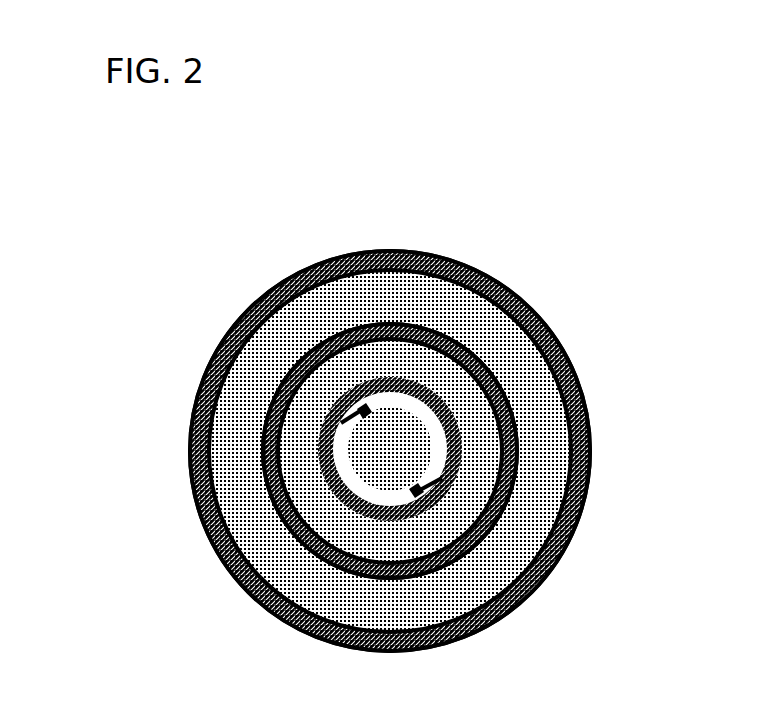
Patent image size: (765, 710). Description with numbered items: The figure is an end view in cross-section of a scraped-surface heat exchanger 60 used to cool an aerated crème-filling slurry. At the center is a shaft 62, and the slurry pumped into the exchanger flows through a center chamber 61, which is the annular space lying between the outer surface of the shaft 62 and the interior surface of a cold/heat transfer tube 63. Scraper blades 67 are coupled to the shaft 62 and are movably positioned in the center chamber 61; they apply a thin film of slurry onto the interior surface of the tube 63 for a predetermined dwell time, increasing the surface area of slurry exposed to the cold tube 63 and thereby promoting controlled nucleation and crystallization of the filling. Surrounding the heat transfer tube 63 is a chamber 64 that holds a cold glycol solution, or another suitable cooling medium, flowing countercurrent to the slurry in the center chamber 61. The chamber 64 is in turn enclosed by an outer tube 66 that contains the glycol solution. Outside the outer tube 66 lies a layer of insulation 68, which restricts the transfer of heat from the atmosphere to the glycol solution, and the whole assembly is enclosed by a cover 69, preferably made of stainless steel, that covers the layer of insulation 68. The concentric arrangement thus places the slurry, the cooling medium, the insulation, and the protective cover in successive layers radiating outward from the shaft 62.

The scraped-surface heat exchanger 60 is at (216, 276).
The center chamber 61 is at (402, 402).
The shaft 62 is at (407, 440).
The cold/heat transfer tube 63 is at (432, 503).
The chamber 64 is at (402, 368).
The outer tube 66 is at (395, 329).
The scraper blades 67 is at (350, 405).
The layer of insulation 68 is at (498, 557).
The cover 69 is at (521, 608).